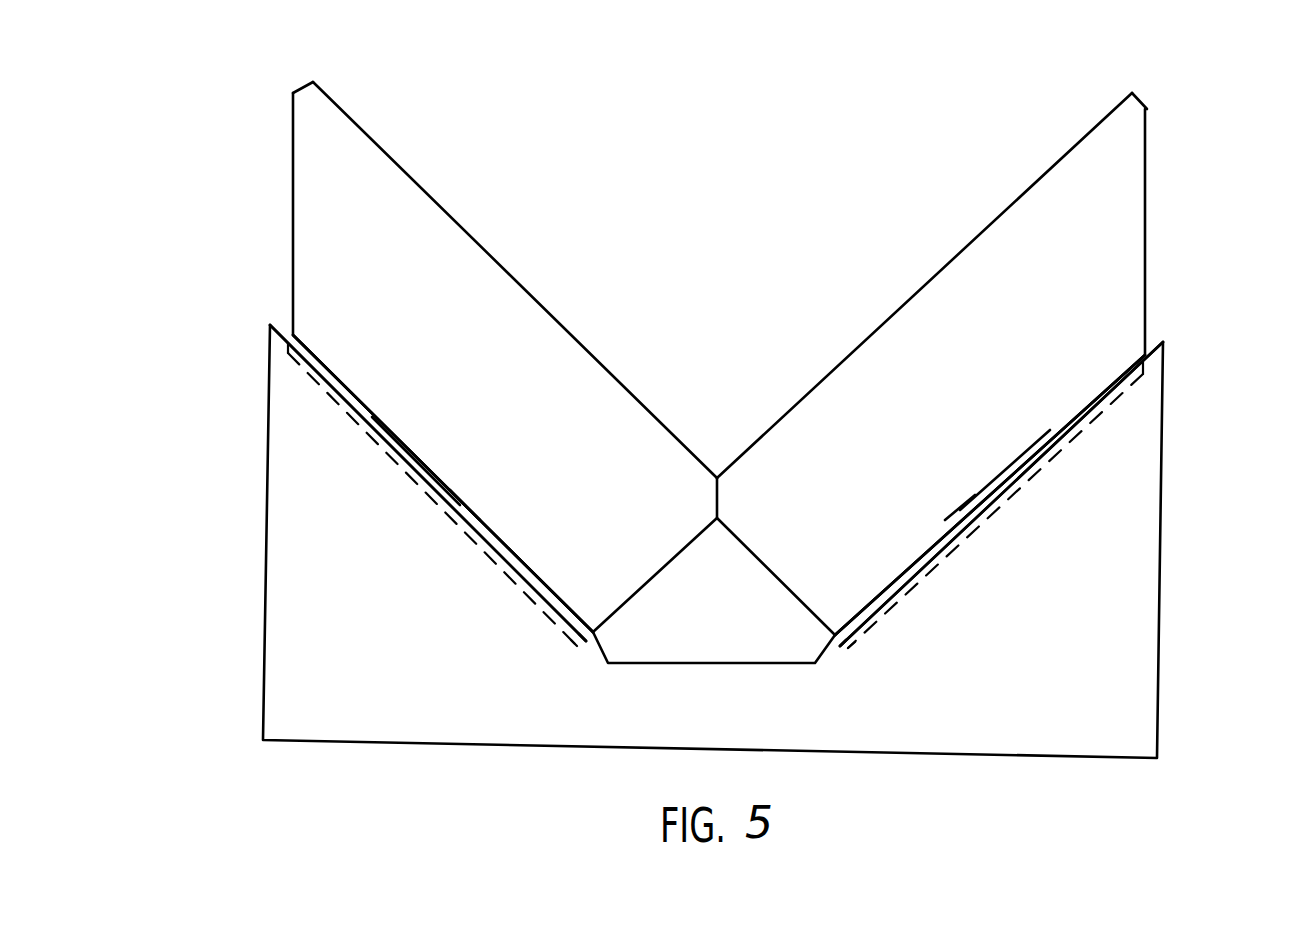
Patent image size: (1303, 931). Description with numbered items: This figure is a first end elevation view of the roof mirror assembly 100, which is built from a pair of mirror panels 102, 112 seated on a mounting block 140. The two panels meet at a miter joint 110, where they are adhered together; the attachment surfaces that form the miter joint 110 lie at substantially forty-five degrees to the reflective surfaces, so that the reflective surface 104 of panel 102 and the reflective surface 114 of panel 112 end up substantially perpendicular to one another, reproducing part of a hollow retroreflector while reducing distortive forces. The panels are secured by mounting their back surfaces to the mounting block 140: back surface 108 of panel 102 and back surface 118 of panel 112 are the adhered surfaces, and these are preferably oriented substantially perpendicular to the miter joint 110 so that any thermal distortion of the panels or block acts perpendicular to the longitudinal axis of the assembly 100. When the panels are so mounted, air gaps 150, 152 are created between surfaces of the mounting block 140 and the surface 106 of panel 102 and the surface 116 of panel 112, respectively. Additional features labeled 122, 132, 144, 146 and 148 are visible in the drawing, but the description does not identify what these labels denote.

The roof mirror assembly 100 is at (527, 84).
The mirror panel 102 is at (1149, 208).
The reflective surface 104 is at (850, 345).
The surface of panel 102 106 is at (982, 508).
The back surface of panel 102 108 is at (953, 520).
The miter joint 110 is at (718, 473).
The mirror panel 112 is at (290, 197).
The reflective surface 114 is at (586, 342).
The surface of panel 112 116 is at (447, 500).
The back surface of panel 112 118 is at (468, 515).
The first panel top edge 122 is at (293, 118).
The second panel top edge 132 is at (1146, 133).
The mounting block 140 is at (293, 575).
The second spacer 144 is at (1055, 434).
The first spacer 146 is at (382, 421).
The bottom segment 148 is at (700, 666).
The air gap 150 is at (281, 325).
The air gap 152 is at (1152, 343).